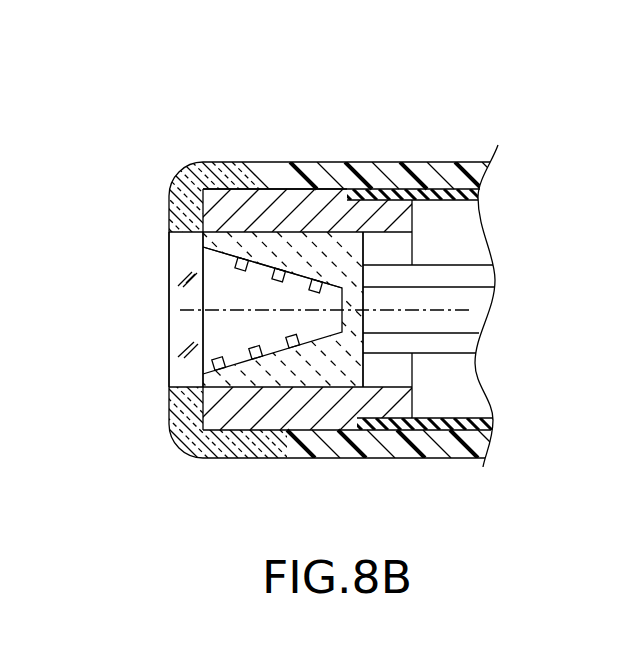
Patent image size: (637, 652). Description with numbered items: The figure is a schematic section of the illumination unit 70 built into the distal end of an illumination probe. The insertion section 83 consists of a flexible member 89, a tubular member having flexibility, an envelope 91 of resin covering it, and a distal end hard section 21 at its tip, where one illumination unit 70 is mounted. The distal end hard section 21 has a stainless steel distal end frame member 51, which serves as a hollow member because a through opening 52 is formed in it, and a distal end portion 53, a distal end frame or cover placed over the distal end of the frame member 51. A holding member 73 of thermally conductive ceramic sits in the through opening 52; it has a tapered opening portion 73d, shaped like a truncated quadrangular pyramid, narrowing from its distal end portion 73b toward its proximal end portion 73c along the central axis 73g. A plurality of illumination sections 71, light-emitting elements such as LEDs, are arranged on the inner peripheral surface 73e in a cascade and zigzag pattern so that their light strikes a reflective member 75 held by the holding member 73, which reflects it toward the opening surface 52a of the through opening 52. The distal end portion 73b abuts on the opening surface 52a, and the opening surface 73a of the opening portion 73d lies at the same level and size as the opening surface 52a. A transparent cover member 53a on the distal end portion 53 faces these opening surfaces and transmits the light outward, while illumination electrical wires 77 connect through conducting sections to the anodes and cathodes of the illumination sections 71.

The distal end hard section 21 is at (128, 166).
The insertion section 83 is at (324, 124).
The illumination unit 70 is at (298, 184).
The distal end portion of the holding member 73b is at (222, 187).
The illumination sections 71 is at (249, 256).
The inner peripheral surface 73e is at (270, 262).
The holding member 73 is at (356, 215).
The proximal end portion of the holding member 73c is at (358, 250).
The envelope 91 is at (442, 170).
The distal end portion 53 is at (169, 203).
The opening surface of the through opening 52a is at (125, 309).
The opening surface of the opening portion 73a is at (187, 262).
The opening portion 73d is at (208, 334).
The cover member 53a is at (187, 372).
The reflective member 75 is at (243, 358).
The through opening 52 is at (398, 244).
The central axis 73g is at (378, 308).
The illumination electrical wires 77 is at (468, 345).
The flexible member 89 is at (480, 422).
The distal end frame member 51 is at (342, 410).